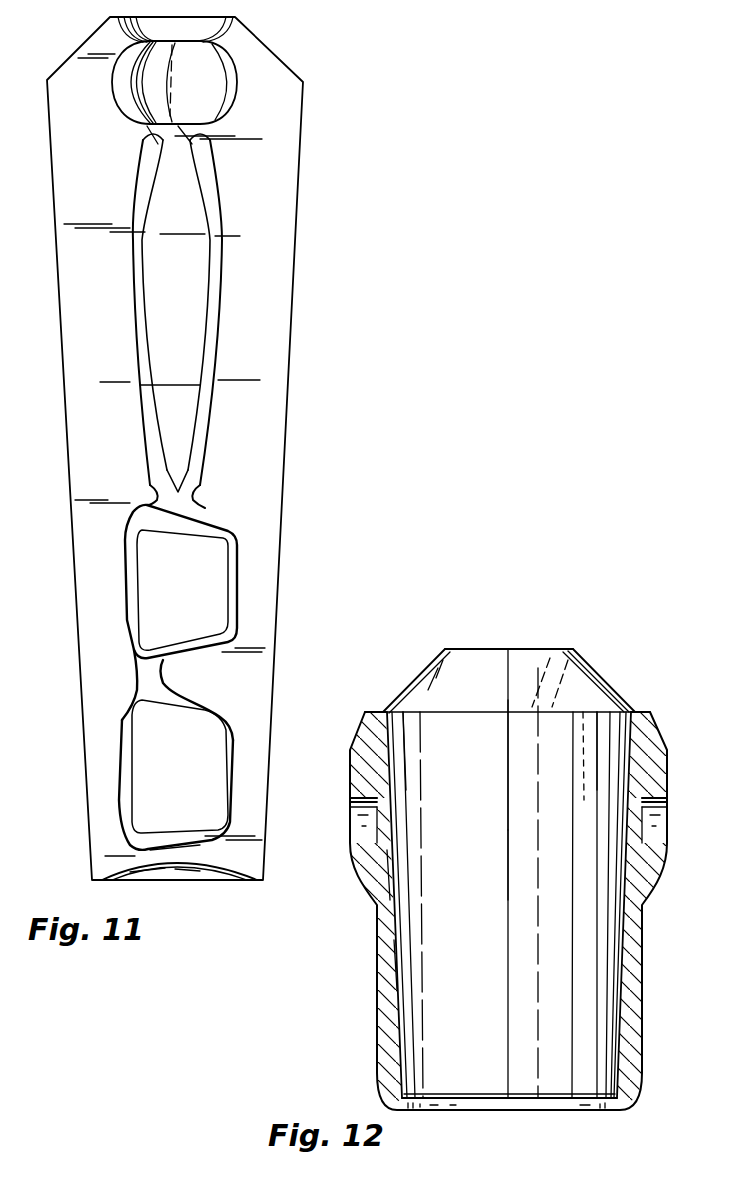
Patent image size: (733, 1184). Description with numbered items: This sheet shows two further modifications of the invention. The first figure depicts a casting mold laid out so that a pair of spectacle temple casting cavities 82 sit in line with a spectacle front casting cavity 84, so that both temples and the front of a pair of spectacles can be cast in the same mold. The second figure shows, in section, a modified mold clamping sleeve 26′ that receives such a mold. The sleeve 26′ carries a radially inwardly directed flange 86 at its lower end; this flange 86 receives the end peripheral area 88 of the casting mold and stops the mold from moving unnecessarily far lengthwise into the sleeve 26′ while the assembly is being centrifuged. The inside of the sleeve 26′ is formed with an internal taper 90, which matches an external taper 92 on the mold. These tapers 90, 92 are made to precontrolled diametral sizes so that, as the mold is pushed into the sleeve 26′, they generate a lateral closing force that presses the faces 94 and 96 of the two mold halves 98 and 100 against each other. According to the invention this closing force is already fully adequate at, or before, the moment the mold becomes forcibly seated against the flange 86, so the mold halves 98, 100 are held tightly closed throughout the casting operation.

In FIG. 12, the mold clamping sleeve 26′ is at (352, 729).
In FIG. 11, the spectacle temple casting cavities 82 is at (133, 280).
In FIG. 11, the spectacle front casting cavity 84 is at (146, 668).
In FIG. 12, the radially inwardly directed flange 86 is at (413, 1100).
In FIG. 12, the end peripheral area 88 is at (533, 1100).
In FIG. 12, the internal taper 90 is at (397, 871).
In FIG. 12, the external taper 92 is at (393, 969).
In FIG. 12, the face 94 is at (508, 845).
In FIG. 12, the face 96 is at (508, 762).
In FIG. 12, the mold half 98 is at (412, 728).
In FIG. 12, the mold half 100 is at (607, 730).